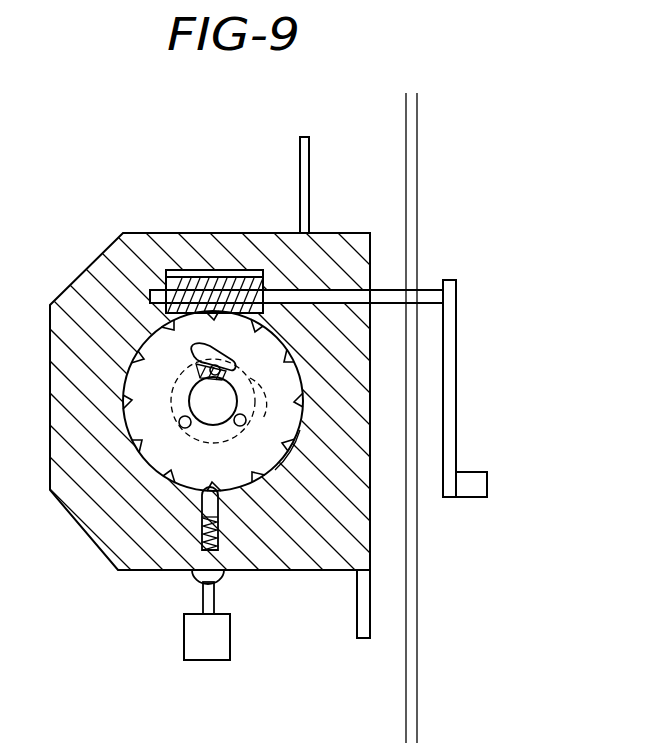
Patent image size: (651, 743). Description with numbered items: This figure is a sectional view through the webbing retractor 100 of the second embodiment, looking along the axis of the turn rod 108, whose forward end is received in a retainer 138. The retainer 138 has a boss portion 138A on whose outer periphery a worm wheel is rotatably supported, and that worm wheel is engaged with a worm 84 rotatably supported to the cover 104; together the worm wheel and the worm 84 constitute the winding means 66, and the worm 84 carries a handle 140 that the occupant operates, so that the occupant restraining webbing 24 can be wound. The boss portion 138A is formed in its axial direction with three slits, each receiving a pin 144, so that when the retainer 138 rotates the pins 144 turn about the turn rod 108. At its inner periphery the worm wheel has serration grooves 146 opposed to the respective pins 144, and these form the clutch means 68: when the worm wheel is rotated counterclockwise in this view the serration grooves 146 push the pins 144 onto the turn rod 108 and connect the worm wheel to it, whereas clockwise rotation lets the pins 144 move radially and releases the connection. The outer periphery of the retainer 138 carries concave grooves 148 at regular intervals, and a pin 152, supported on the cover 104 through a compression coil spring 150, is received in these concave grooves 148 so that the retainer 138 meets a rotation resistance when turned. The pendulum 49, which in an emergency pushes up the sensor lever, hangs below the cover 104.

The webbing retractor 100 is at (114, 206).
The cover 104 is at (348, 252).
The occupant restraining webbing 24 is at (310, 165).
The winding means 66 is at (246, 263).
The worm 84 is at (216, 270).
The clutch means 68 is at (222, 358).
The turn rod 108 is at (238, 390).
The retainer 138 is at (184, 392).
The boss portion 138A is at (246, 408).
The serration grooves 146 is at (198, 355).
The pins 144 is at (235, 360).
The pin 152 is at (210, 495).
The compression coil spring 150 is at (220, 526).
The pendulum 49 is at (222, 636).
The concave grooves 148 is at (293, 452).
The handle 140 is at (458, 410).